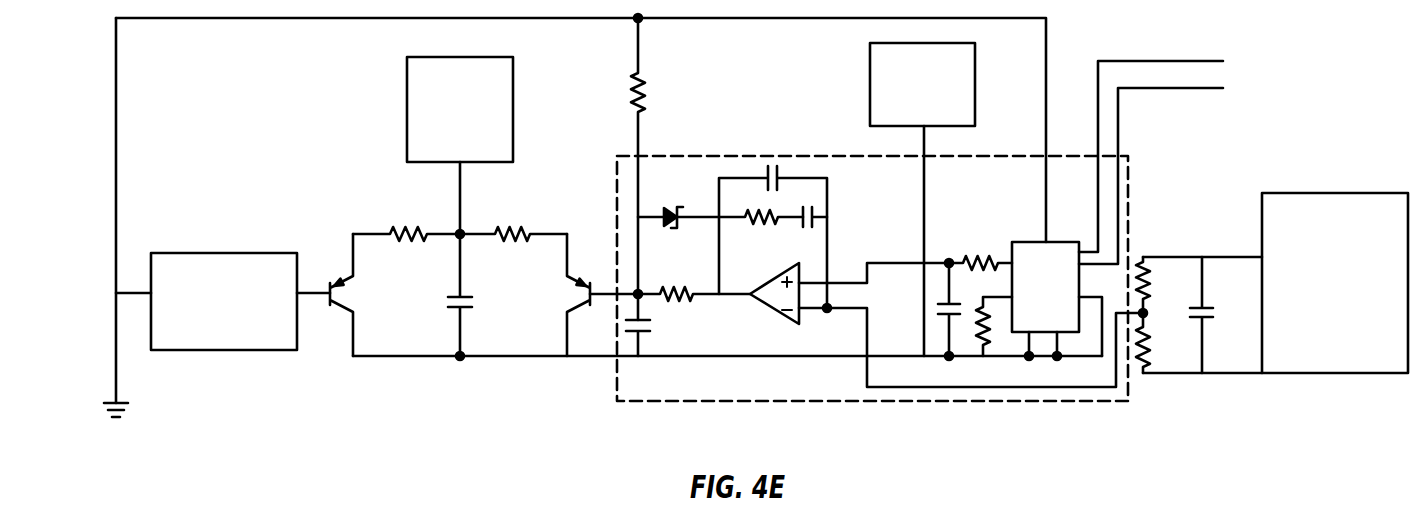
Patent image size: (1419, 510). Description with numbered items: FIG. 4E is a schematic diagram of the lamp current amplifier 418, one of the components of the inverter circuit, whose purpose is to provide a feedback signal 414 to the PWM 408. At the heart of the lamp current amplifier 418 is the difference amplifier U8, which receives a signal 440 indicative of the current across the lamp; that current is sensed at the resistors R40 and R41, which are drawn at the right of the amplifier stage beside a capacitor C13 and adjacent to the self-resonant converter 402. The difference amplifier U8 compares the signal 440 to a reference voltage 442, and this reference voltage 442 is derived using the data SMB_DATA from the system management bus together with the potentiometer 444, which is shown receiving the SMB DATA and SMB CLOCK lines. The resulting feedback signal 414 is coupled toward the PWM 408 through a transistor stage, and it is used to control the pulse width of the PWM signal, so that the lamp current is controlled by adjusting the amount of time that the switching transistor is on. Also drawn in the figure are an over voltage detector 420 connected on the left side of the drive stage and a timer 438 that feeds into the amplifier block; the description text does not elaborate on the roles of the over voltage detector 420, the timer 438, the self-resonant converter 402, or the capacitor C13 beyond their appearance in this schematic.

The self-resonant converter 402 is at (1323, 193).
The PWM 408 is at (513, 100).
The feedback signal 414 is at (618, 258).
The lamp current amplifier 418 is at (1130, 196).
The over voltage detector 420 is at (223, 252).
The timer 438 is at (870, 84).
The signal 440 is at (867, 346).
The reference voltage 442 is at (915, 262).
The potentiometer 444 is at (1033, 241).
The difference amplifier U8 is at (732, 245).
The resistor R40 is at (1166, 285).
The resistor R41 is at (1166, 343).
The capacitor C13 is at (1213, 312).